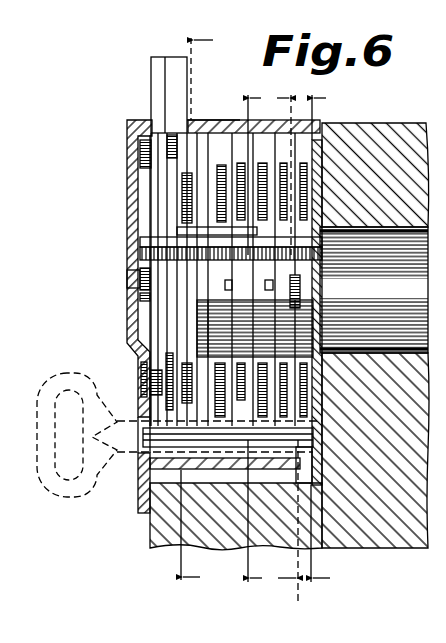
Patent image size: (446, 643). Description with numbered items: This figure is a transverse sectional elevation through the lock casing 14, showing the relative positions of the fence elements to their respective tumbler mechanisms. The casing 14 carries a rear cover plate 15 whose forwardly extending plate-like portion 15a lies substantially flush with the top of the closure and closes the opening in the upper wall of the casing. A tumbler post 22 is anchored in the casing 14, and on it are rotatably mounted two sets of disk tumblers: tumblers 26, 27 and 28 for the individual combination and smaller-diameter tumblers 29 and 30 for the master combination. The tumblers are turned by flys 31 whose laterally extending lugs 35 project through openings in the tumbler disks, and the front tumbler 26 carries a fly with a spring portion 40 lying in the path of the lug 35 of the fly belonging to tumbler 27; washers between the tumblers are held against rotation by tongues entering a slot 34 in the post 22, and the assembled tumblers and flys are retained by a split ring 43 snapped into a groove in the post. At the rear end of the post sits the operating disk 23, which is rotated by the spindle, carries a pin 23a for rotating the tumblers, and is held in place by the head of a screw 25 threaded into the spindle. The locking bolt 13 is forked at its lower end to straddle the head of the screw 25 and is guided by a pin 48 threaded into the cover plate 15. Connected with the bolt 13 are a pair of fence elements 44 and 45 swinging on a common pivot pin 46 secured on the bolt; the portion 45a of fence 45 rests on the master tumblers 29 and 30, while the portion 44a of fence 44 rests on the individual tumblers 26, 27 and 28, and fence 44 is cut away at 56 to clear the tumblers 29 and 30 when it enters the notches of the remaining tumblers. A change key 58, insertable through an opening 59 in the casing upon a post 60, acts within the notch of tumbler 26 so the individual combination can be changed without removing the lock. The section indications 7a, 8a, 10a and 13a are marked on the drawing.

The locking bolt 13 is at (158, 70).
The section line 13a is at (200, 35).
The plate-like portion 15a is at (205, 118).
The section line 10a is at (250, 336).
The section line 7a is at (294, 349).
The section line 8a is at (330, 340).
The tumbler 28 is at (318, 128).
The pivot pin 46 is at (130, 132).
The rear cover plate 15 is at (128, 154).
The operating disk 23 is at (197, 174).
The tumbler 29 is at (240, 173).
The tumbler 30 is at (219, 180).
The tumbler 27 is at (305, 174).
The front tumbler 26 is at (312, 202).
The portion of fence 45a is at (185, 198).
The fence element 44 is at (178, 229).
The fence element 45 is at (165, 210).
The portion of fence element 44a is at (318, 243).
The pin 23a is at (207, 259).
The cut-away portion 56 is at (138, 283).
The screw 25 is at (188, 296).
The lugs 35 is at (140, 316).
The spring portion 40 is at (305, 285).
The slot 34 is at (338, 302).
The tumbler post 22 is at (374, 290).
The split ring 43 is at (187, 366).
The pin 48 is at (141, 386).
The casing 14 is at (316, 406).
The flys 31 is at (227, 360).
The opening 59 is at (145, 452).
The change key 58 is at (68, 499).
The post 60 is at (214, 430).